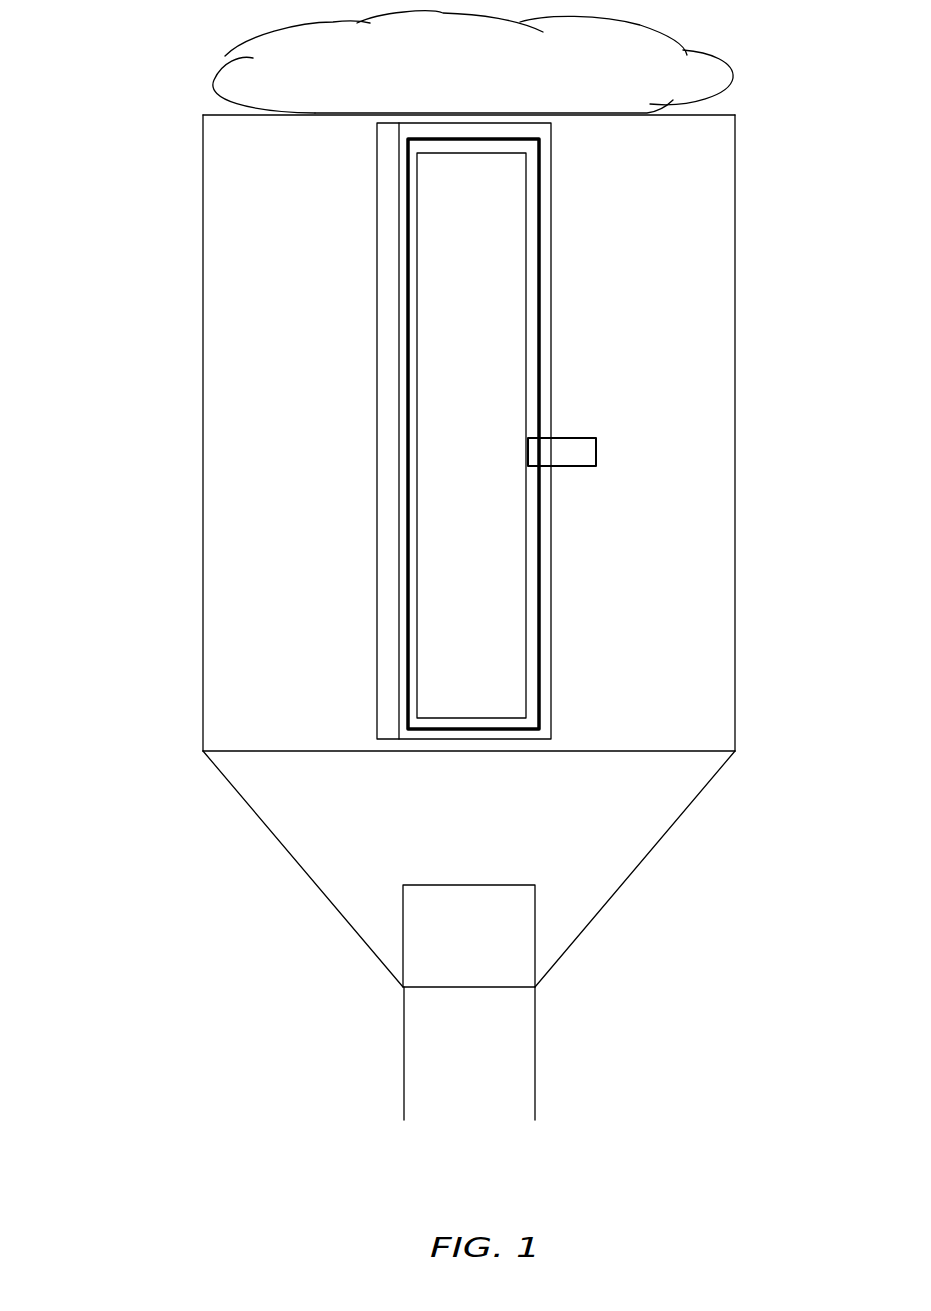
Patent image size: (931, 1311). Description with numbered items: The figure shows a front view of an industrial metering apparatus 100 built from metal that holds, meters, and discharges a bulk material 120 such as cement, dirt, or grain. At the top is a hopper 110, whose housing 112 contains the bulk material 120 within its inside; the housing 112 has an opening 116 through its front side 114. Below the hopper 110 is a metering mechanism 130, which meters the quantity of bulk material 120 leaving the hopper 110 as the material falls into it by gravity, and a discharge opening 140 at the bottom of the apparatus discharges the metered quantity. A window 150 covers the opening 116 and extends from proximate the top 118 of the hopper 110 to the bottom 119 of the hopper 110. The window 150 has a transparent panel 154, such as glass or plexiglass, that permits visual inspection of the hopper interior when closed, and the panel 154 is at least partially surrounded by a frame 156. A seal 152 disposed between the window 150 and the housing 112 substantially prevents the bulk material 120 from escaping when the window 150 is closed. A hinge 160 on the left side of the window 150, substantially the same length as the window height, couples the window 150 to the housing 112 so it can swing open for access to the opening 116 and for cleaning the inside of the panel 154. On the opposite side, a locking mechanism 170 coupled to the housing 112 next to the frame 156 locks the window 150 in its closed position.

The industrial metering apparatus 100 is at (157, 53).
The hopper 110 is at (435, 618).
The housing 112 is at (203, 432).
The front side 114 is at (720, 430).
The opening 116 is at (500, 334).
The top 118 is at (728, 113).
The bottom 119 is at (605, 752).
The bulk material 120 is at (486, 80).
The metering mechanism 130 is at (486, 954).
The discharge opening 140 is at (477, 1087).
The window 150 is at (475, 431).
The seal 152 is at (540, 197).
The panel 154 is at (500, 575).
The frame 156 is at (545, 679).
The hinge 160 is at (388, 433).
The locking mechanism 170 is at (579, 437).